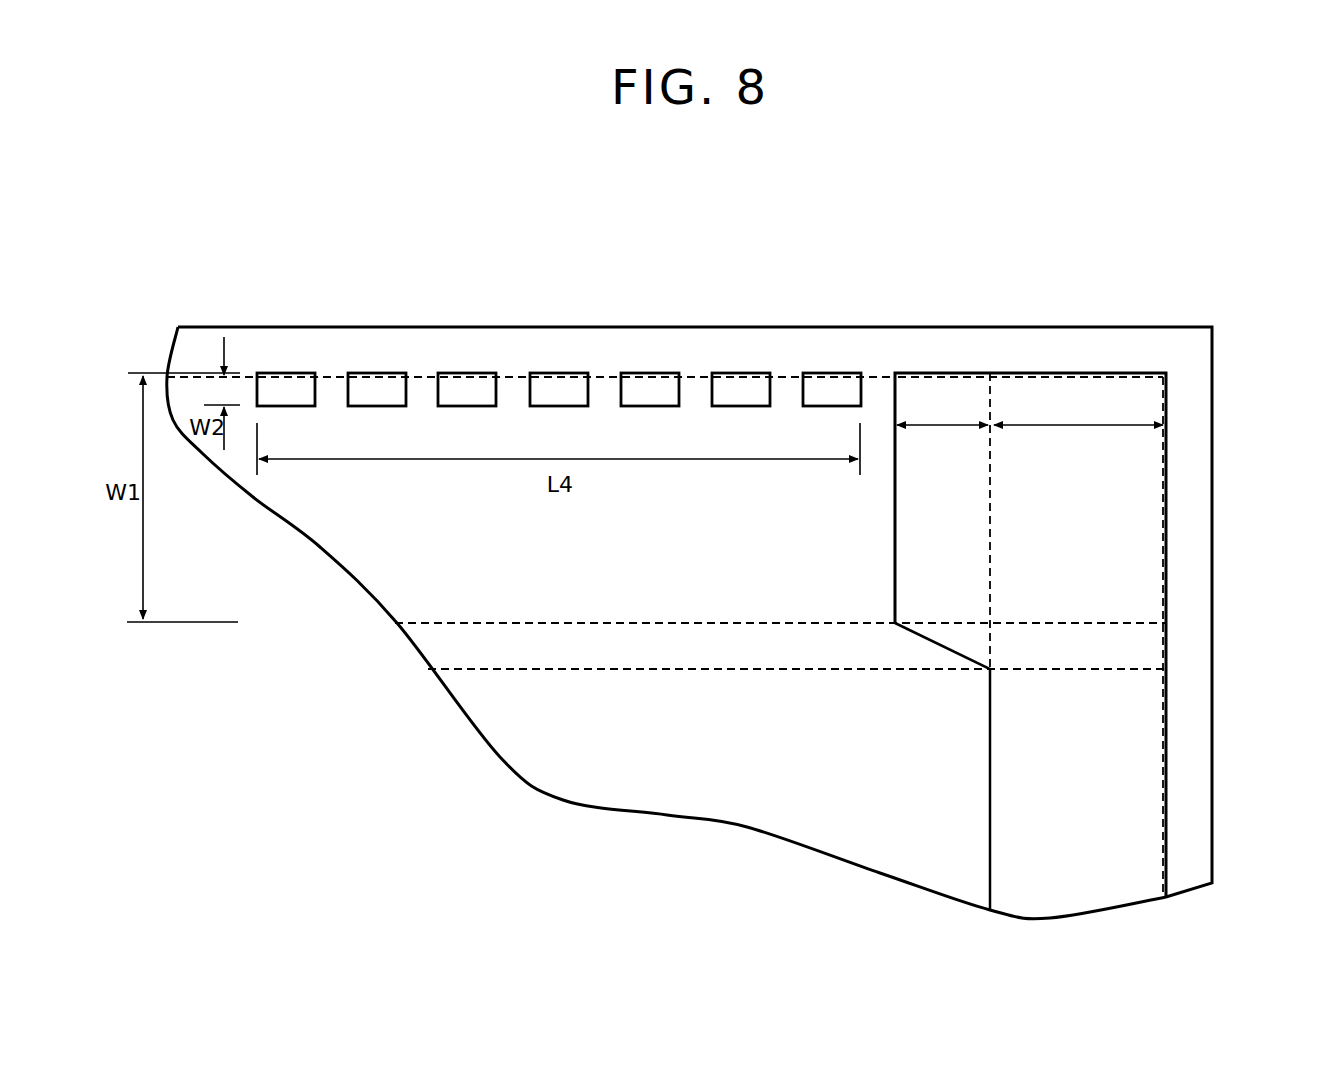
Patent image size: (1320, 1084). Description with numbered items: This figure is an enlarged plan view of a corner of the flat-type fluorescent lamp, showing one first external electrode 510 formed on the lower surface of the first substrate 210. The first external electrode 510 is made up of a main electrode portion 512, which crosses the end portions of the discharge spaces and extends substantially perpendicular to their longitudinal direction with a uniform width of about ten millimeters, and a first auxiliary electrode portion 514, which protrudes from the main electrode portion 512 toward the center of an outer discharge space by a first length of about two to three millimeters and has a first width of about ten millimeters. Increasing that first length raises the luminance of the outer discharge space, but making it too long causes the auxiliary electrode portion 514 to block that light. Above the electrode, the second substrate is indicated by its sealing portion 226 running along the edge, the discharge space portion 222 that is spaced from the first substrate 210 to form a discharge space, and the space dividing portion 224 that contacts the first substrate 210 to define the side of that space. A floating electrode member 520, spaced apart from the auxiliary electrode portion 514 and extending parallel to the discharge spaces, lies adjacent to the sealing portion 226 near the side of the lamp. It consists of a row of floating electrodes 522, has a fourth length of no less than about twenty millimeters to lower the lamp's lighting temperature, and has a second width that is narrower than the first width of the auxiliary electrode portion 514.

The first substrate 210 is at (1212, 642).
The first external electrode 510 is at (1167, 540).
The main electrode portion 512 is at (1078, 393).
The first auxiliary electrode portion 514 is at (938, 393).
The sealing portion 226 is at (273, 352).
The floating electrode member 520 is at (375, 355).
The floating electrode 522 is at (722, 393).
The discharge space portion 222 is at (468, 442).
The space dividing portion 224 is at (443, 650).